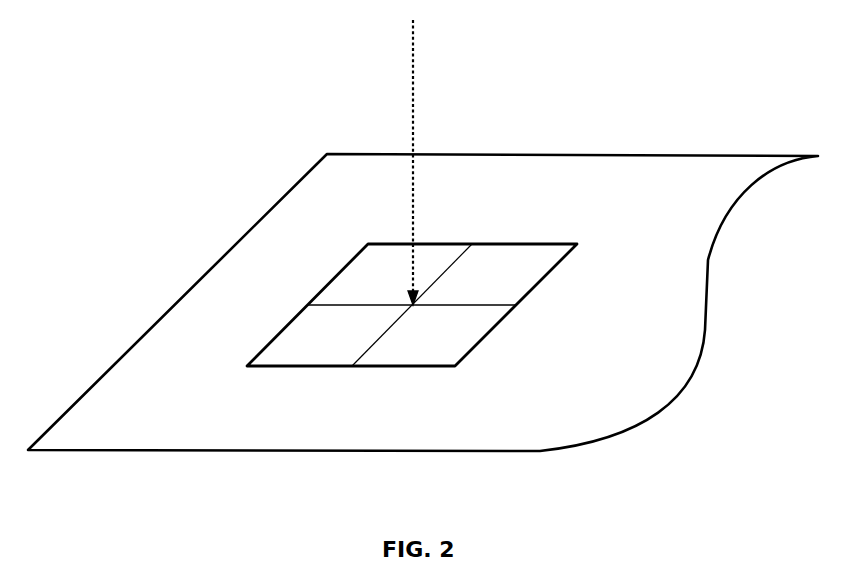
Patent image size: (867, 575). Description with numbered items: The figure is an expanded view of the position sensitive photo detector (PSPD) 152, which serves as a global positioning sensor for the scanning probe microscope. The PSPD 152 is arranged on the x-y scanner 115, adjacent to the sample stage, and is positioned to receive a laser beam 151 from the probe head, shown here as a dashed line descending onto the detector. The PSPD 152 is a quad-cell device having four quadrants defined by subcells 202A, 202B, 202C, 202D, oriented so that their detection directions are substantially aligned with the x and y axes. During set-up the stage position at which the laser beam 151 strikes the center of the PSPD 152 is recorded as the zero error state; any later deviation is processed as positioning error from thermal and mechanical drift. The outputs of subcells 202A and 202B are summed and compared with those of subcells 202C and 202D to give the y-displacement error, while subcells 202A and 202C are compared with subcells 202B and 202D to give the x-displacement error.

The x-y scanner 115 is at (707, 199).
The laser beam 151 is at (412, 103).
The position sensitive photo detector 152 is at (441, 234).
The subcell 202A is at (403, 281).
The subcell 202B is at (517, 283).
The subcell 202C is at (355, 342).
The subcell 202D is at (459, 343).